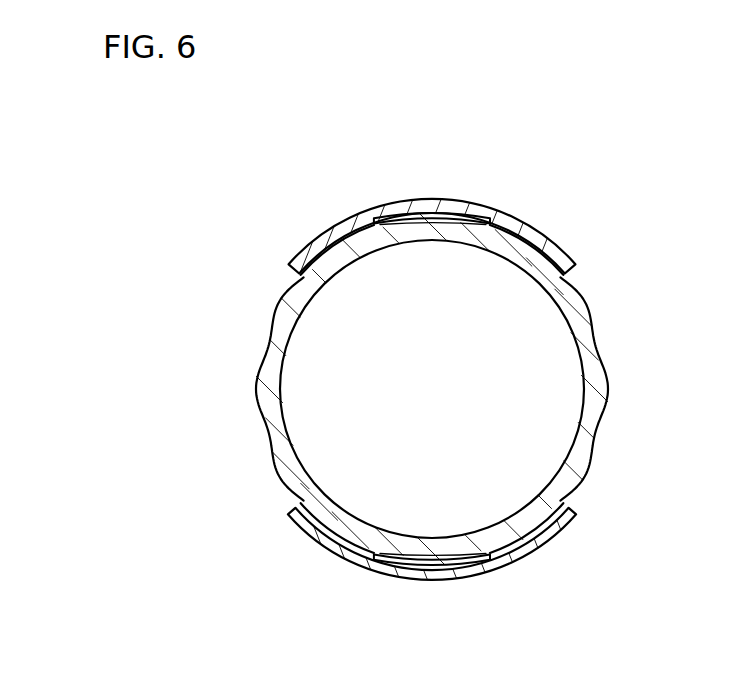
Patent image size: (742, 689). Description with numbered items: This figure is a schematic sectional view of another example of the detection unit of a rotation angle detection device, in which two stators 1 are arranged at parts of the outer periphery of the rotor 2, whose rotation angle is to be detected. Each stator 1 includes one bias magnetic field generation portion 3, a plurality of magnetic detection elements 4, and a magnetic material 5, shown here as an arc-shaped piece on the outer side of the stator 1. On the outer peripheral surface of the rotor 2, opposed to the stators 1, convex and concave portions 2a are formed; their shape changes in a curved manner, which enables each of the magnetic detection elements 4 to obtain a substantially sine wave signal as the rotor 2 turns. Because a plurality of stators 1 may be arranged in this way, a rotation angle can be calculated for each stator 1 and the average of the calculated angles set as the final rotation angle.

The stator 1 is at (471, 351).
The rotor 2 is at (482, 388).
The convex and concave portions 2a is at (571, 286).
The bias magnetic field generation portion 3 is at (396, 214).
The magnetic detection elements 4 is at (457, 201).
The magnetic material 5 is at (326, 229).